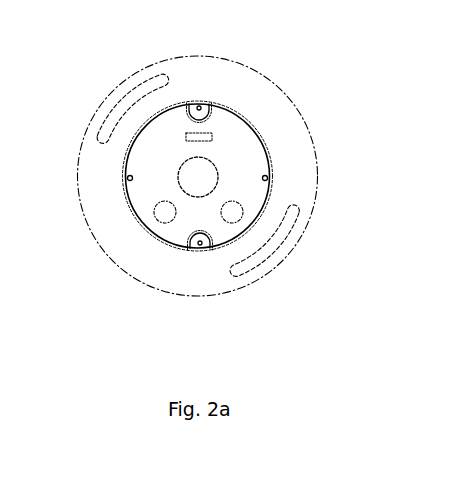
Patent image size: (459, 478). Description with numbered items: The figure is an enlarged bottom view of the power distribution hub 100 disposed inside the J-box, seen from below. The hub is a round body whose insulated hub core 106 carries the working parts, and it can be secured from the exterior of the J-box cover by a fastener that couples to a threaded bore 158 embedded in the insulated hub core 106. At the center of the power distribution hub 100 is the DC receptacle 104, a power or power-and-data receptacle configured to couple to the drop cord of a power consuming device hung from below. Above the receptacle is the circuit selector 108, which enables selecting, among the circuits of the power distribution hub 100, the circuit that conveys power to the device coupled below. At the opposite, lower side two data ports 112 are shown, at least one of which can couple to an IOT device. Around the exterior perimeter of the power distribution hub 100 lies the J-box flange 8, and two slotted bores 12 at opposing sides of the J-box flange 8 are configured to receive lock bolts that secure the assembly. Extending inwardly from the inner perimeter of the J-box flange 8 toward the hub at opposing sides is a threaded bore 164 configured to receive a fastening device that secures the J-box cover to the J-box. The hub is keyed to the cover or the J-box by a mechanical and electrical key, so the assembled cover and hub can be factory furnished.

The J-box flange 8 is at (97, 182).
The slotted bore 12 is at (130, 96).
The power distribution hub 100 is at (137, 188).
The insulated hub core 106 is at (142, 201).
The DC receptacle 104 is at (208, 170).
The circuit selector 108 is at (208, 133).
The data port 112 is at (244, 211).
The PDH threaded bore 158 is at (270, 178).
The J-box threaded bore 164 is at (198, 245).